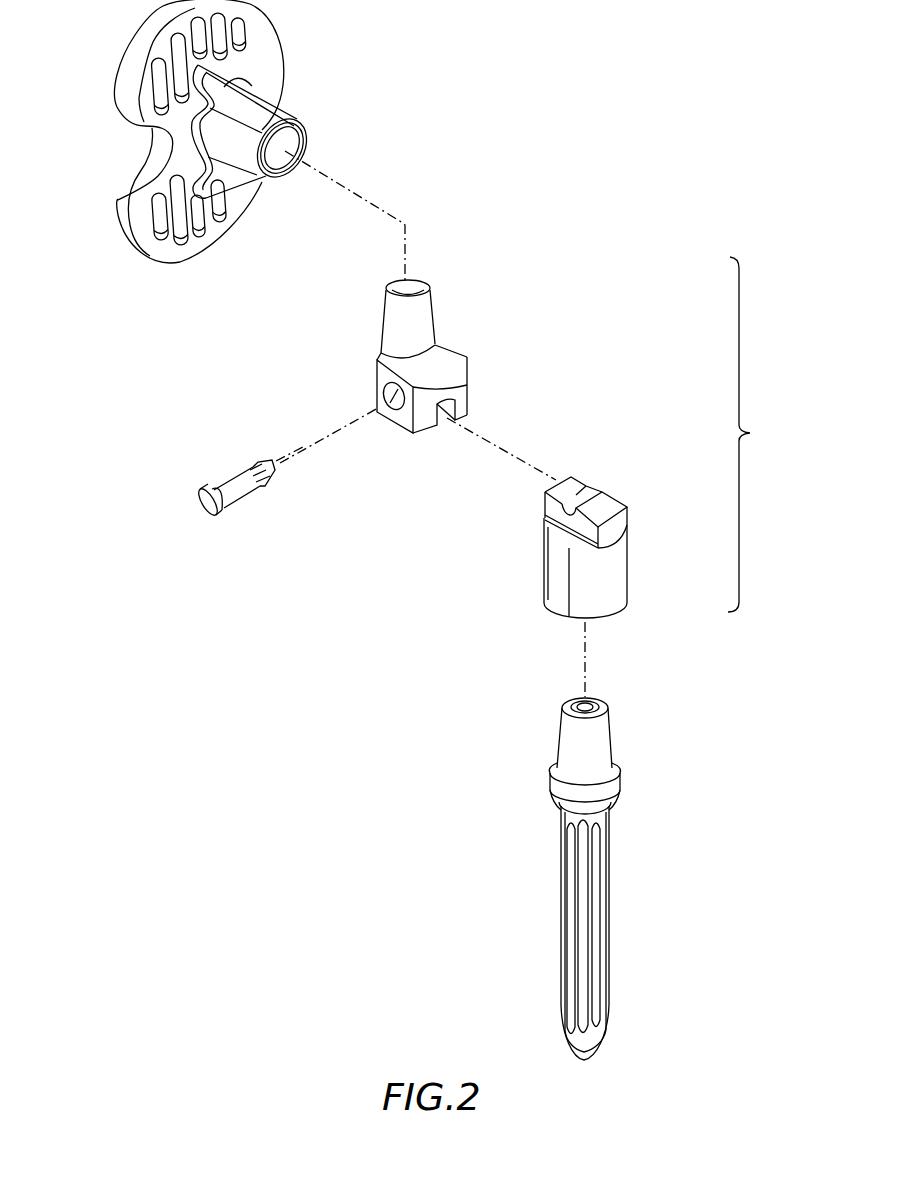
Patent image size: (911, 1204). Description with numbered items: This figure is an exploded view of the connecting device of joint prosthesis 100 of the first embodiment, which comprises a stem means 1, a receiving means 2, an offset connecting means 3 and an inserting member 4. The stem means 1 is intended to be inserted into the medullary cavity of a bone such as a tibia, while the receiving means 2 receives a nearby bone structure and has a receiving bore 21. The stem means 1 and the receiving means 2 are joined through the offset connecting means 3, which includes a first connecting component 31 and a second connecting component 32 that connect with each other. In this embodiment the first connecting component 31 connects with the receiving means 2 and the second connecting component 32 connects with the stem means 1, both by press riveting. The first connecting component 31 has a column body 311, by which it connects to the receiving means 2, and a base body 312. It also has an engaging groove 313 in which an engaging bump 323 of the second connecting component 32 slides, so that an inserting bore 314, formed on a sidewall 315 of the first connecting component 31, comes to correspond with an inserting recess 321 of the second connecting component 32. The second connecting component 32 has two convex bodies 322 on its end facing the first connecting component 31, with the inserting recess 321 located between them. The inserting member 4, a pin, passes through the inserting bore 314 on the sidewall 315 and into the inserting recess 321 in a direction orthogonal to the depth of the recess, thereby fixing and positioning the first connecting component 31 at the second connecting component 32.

The connecting device of joint prosthesis 100 is at (727, 68).
The stem means 1 is at (602, 918).
The receiving means 2 is at (262, 67).
The receiving bore 21 is at (290, 140).
The offset connecting means 3 is at (749, 434).
The first connecting component 31 is at (428, 316).
The column body 311 is at (395, 316).
The base body 312 is at (463, 386).
The engaging groove 313 is at (465, 404).
The inserting bore 314 is at (378, 388).
The sidewall 315 is at (392, 416).
The second connecting component 32 is at (595, 528).
The inserting recess 321 is at (590, 494).
The convex bodies 322 is at (605, 508).
The engaging bump 323 is at (550, 507).
The inserting member 4 is at (210, 508).